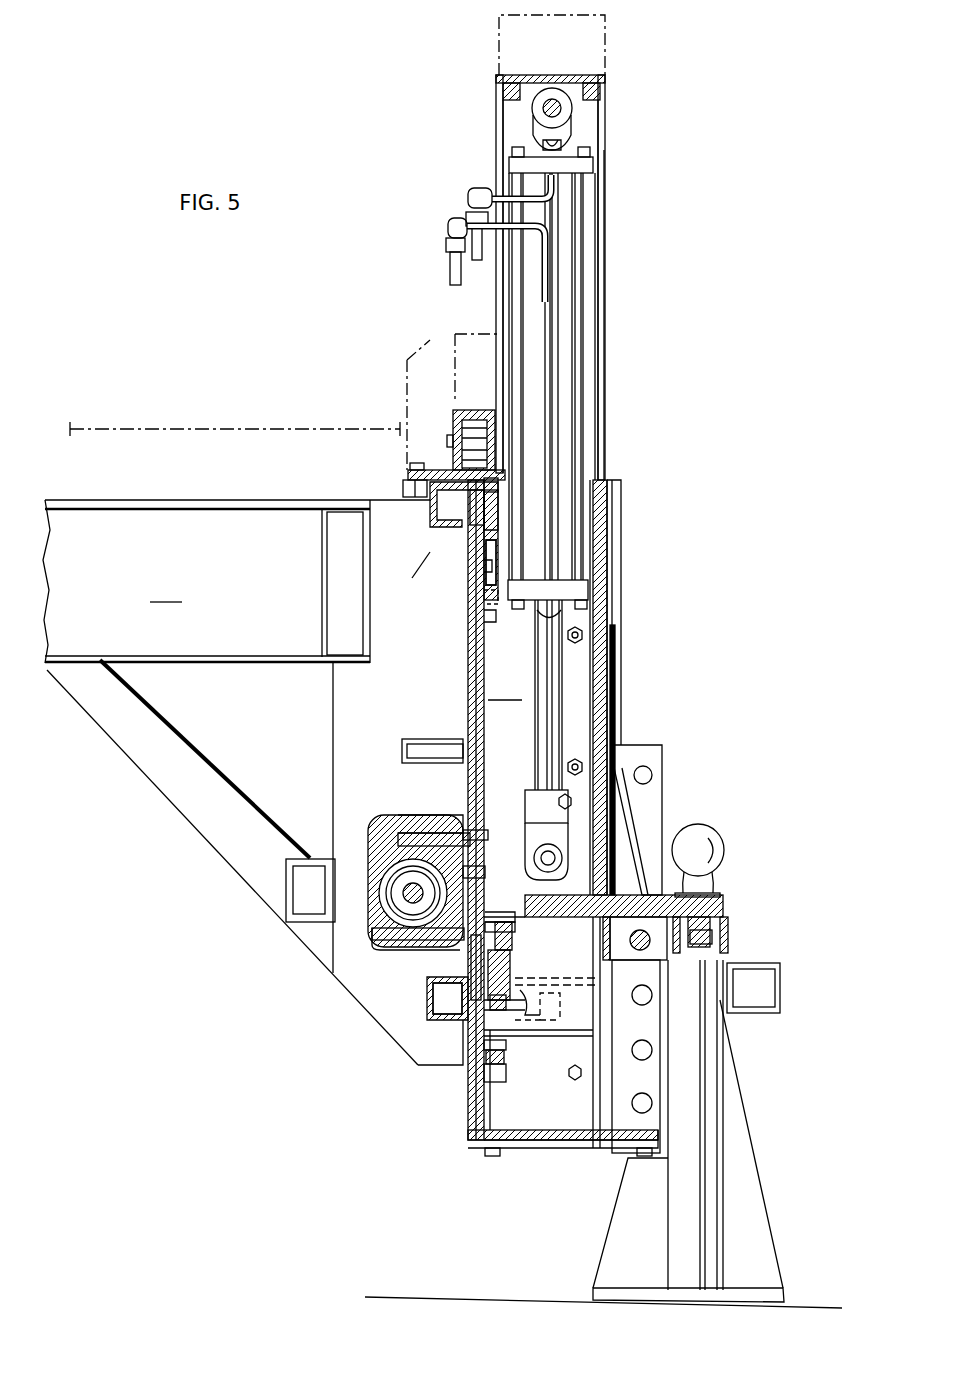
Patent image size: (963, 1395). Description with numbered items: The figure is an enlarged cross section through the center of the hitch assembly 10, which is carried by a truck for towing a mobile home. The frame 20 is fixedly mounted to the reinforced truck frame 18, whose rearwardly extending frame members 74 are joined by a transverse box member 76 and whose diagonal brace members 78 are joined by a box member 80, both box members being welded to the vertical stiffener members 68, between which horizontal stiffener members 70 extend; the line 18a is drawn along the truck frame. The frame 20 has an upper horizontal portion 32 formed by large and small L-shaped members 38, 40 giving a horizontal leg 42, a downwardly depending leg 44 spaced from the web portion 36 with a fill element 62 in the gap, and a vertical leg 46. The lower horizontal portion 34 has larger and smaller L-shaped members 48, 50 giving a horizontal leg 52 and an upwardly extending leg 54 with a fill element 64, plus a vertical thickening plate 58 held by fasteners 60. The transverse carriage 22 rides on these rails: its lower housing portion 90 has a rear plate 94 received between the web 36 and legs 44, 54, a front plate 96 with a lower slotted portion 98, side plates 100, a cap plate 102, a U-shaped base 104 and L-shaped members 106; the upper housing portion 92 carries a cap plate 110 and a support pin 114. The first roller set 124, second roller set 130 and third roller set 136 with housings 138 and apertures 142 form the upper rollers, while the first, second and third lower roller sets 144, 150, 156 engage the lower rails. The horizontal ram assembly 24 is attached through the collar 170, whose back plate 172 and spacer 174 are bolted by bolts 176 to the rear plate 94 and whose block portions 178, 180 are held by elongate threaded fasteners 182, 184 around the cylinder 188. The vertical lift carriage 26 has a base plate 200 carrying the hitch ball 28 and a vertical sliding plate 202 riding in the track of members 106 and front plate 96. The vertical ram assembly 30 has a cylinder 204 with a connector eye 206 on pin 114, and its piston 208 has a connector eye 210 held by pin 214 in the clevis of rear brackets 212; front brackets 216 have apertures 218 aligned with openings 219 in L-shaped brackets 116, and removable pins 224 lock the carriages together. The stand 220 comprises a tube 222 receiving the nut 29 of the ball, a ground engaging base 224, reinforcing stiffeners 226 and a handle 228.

The hitch assembly 10 is at (722, 266).
The truck frame 18 is at (228, 501).
The beam axis 18a is at (240, 426).
The frame 20 is at (326, 726).
The transverse carriage 22 is at (632, 386).
The ram assembly 24 is at (368, 880).
The vertical lift carriage 26 is at (694, 777).
The hitch ball 28 is at (724, 849).
The nut 29 is at (716, 921).
The vertical ram assembly 30 is at (606, 201).
The upper horizontal portion 32 is at (407, 575).
The lower horizontal portion 34 is at (449, 1040).
The web portion 36 is at (468, 689).
The large L-shaped member 38 is at (488, 494).
The small L-shaped member 40 is at (430, 540).
The horizontal leg 42 is at (437, 466).
The downwardly depending leg 44 is at (500, 527).
The vertical leg 46 is at (431, 512).
The larger L-shaped member 48 is at (433, 1019).
The smaller L-shaped member 50 is at (430, 987).
The horizontal leg 52 is at (417, 1062).
The upwardly extending leg 54 is at (500, 973).
The vertical thickening plate 58 is at (476, 963).
The fasteners 60 is at (500, 1000).
The fill element 62 is at (482, 503).
The fill element 64 is at (495, 1047).
The vertical stiffener members 68 is at (333, 771).
The horizontal stiffener members 70 is at (426, 740).
The frame members 74 is at (166, 590).
The transverse box member 76 is at (322, 572).
The diagonal brace members 78 is at (142, 745).
The box member 80 is at (302, 923).
The lower housing portion 90 is at (622, 544).
The upper housing portion 92 is at (606, 318).
The rear plate 94 is at (485, 641).
The front plate 96 is at (608, 511).
The lower slotted portion 98 is at (606, 706).
The side plates 100 is at (518, 695).
The cap plate 102 is at (446, 469).
The U-shaped base 104 is at (526, 1150).
The L-shaped members 106 is at (616, 633).
The cap plate 110 is at (570, 76).
The support pin 114 is at (541, 109).
The L-shaped spaced brackets 116 is at (662, 1118).
The first roller set 124 is at (470, 407).
The second roller set 130 is at (403, 488).
The third roller set 136 is at (474, 598).
The housings 138 is at (492, 591).
The apertures 142 is at (458, 622).
The first roller set 144 is at (520, 936).
The second roller set 150 is at (533, 1006).
The third roller set 156 is at (497, 1056).
The collar 170 is at (420, 829).
The back plate 172 is at (422, 820).
The spacer 174 is at (498, 855).
The bolts 176 is at (493, 815).
The block portion 178 is at (384, 869).
The block portion 180 is at (450, 831).
The elongate threaded fastener 182 is at (380, 845).
The elongate threaded fastener 184 is at (376, 936).
The cylinder 188 is at (410, 897).
The base plate 200 is at (600, 871).
The vertical sliding plate 202 is at (615, 736).
The cylinder 204 is at (541, 321).
The connector eye 206 is at (573, 131).
The piston 208 is at (563, 690).
The connector eye 210 is at (536, 862).
The rear brackets 212 is at (587, 845).
The pin 214 is at (548, 845).
The front brackets 216 is at (706, 830).
The apertures 218 is at (660, 945).
The openings 219 is at (652, 1050).
The stand 220 is at (766, 1115).
The tube 222 is at (725, 1186).
The removable pins 224 is at (735, 969).
The reinforcing stiffeners 226 is at (615, 1216).
The handle 228 is at (783, 1002).